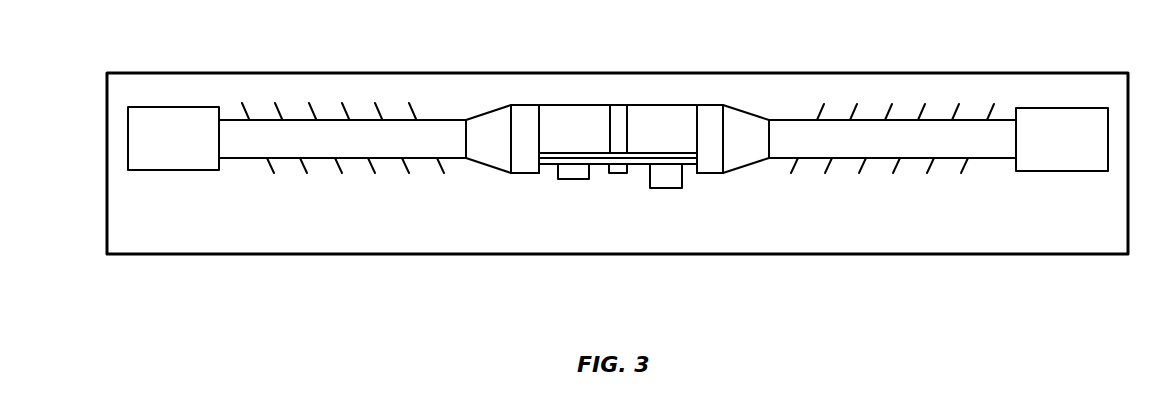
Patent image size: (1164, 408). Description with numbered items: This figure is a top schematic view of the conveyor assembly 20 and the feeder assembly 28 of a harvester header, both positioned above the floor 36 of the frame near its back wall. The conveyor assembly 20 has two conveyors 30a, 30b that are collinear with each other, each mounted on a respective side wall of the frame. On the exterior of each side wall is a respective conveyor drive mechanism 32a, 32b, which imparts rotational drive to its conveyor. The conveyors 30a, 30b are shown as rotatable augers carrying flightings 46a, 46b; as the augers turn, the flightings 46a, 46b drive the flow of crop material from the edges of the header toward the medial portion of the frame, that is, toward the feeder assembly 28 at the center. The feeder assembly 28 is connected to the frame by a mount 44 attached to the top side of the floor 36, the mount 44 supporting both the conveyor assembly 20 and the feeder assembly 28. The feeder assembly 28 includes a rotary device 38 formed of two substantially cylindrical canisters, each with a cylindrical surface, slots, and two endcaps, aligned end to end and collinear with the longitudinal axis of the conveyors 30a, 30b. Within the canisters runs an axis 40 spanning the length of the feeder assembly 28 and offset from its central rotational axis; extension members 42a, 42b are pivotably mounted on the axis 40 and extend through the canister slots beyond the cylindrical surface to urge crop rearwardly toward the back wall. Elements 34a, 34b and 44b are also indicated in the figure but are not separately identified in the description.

The conveyor assembly 20 is at (894, 47).
The feeder assembly 28 is at (725, 91).
The conveyor 30a is at (354, 158).
The conveyor 30b is at (879, 158).
The conveyor drive mechanism 32a is at (173, 107).
The conveyor drive mechanism 32b is at (1057, 108).
The first end wall 34a is at (525, 173).
The second end wall 34b is at (710, 173).
The floor 36 is at (1008, 254).
The rotary device 38 is at (571, 105).
The axis 40 is at (550, 157).
The extension member 42a is at (575, 179).
The extension member 42b is at (665, 188).
The mount 44 is at (618, 173).
The second set of fins 44b is at (840, 93).
The flighting 46a is at (316, 118).
The flighting 46b is at (955, 110).